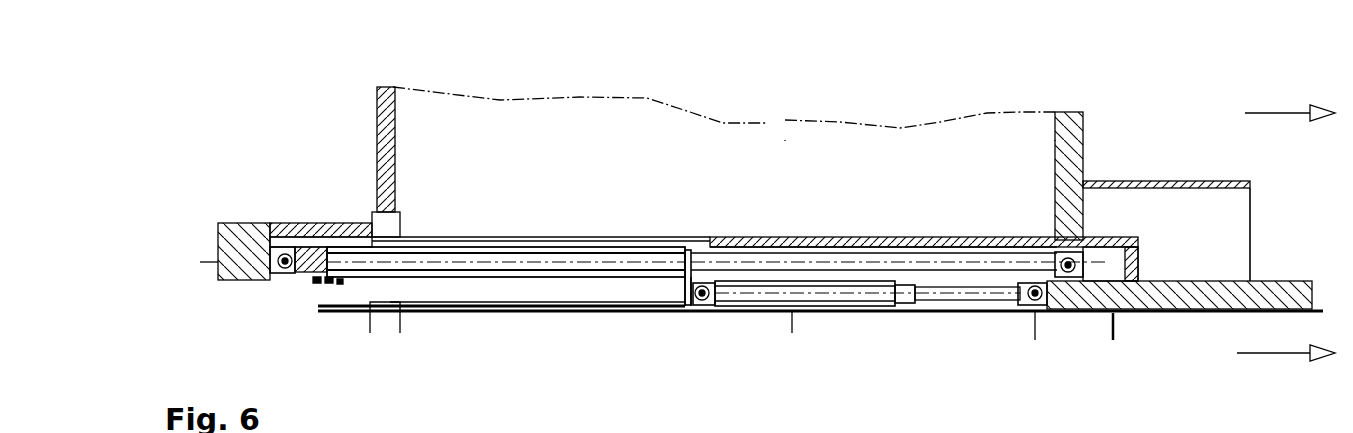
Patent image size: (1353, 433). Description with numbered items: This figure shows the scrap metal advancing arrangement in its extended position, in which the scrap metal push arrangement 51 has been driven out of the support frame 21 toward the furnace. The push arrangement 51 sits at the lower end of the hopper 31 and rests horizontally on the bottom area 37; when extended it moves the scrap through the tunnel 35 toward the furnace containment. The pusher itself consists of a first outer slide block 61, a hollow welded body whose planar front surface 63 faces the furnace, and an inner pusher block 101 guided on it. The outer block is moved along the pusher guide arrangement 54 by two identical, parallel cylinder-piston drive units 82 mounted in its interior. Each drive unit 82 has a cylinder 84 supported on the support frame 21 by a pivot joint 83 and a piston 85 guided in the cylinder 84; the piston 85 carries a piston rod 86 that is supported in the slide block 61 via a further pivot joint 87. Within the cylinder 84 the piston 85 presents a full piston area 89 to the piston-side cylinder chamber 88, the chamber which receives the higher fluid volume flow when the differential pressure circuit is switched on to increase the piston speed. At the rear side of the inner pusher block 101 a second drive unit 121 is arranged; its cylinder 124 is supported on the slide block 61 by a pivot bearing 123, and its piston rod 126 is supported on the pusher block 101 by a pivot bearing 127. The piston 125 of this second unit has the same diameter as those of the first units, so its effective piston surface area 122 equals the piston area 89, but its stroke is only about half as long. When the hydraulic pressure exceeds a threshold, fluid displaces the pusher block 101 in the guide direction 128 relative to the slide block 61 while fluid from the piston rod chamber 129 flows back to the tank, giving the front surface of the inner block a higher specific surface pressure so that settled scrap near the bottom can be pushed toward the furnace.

The support frame 21 is at (387, 140).
The drive unit 82 is at (468, 241).
The piston-side cylinder chamber 88 is at (533, 257).
The piston area 89 is at (588, 250).
The piston 85 is at (690, 253).
The piston rod 86 is at (733, 260).
The scrap metal push arrangement 51 is at (827, 230).
The slide block 61 is at (878, 247).
The hopper 31 is at (926, 196).
The pivot joint 87 is at (1055, 245).
The front surface 63 is at (1118, 157).
The tunnel 35 is at (1202, 182).
The pusher guide arrangement 54 is at (1268, 113).
The pivot joint 83 is at (287, 268).
The cylinder 84 is at (345, 276).
The pivot bearing 123 is at (573, 347).
The cylinder 124 is at (617, 346).
The piston surface area 122 is at (650, 343).
The drive unit 121 is at (895, 292).
The piston 125 is at (822, 317).
The piston rod chamber 129 is at (896, 314).
The piston rod 126 is at (937, 295).
The pivot bearing 127 is at (1025, 300).
The pusher block 101 is at (1093, 297).
The bottom area 37 is at (1240, 312).
The guide direction 128 is at (1280, 353).